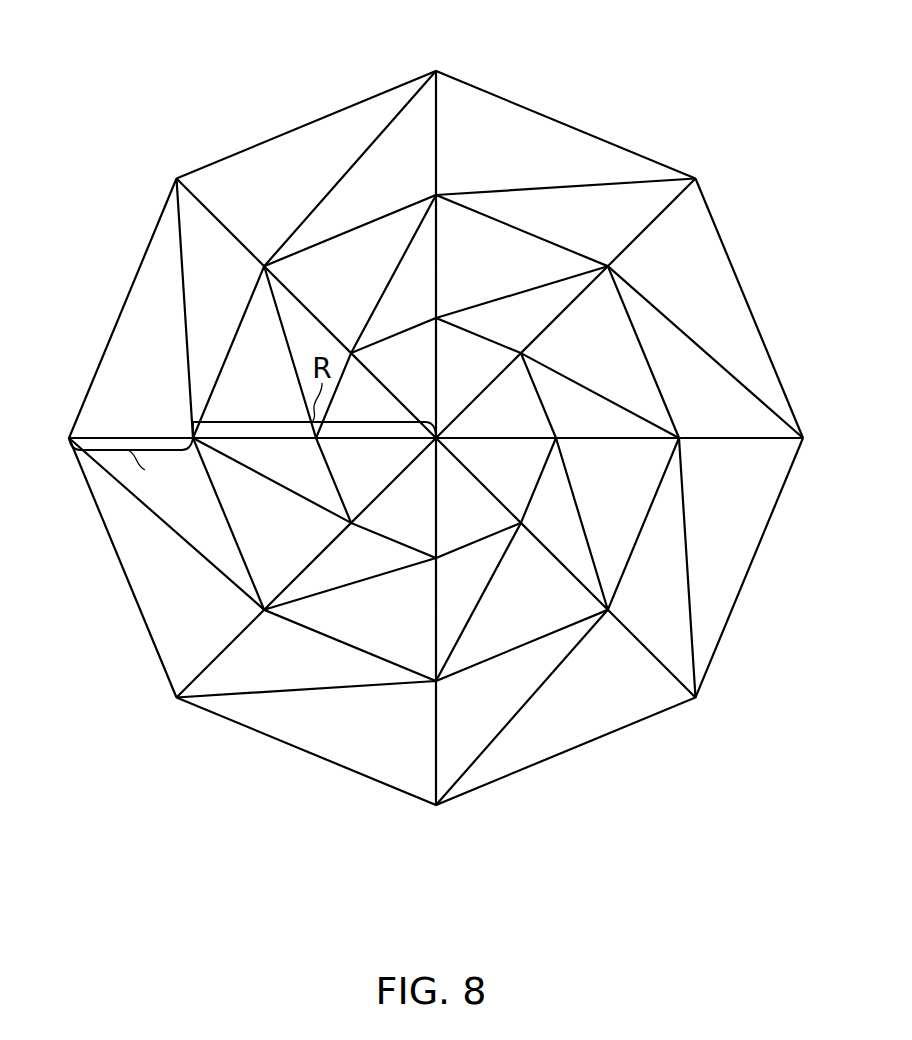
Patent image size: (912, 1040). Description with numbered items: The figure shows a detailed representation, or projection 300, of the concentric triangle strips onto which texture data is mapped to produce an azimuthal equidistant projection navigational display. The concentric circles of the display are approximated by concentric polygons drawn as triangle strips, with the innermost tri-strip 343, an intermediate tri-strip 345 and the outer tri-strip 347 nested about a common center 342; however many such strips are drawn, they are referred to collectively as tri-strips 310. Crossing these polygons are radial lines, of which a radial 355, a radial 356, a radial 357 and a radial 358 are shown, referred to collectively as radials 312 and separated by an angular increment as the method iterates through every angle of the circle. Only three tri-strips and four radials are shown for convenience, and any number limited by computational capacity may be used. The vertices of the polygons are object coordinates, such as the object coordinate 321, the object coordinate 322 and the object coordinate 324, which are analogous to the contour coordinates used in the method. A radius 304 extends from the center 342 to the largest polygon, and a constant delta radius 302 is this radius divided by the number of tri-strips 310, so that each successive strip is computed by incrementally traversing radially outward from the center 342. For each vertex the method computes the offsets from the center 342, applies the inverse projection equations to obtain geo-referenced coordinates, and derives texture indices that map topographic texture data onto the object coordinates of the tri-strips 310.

The projection 300 is at (285, 875).
The constant delta radius value 302 is at (127, 450).
The radius 304 is at (308, 421).
The tri-strips 310 is at (228, 748).
The radials 312 is at (125, 700).
The object coordinate 321 is at (68, 438).
The object coordinate 322 is at (436, 71).
The object coordinate 324 is at (803, 438).
The center 342 is at (438, 432).
The concentric tri-strip 343 is at (468, 547).
The concentric tri-strip 345 is at (653, 505).
The concentric tri-strip 347 is at (743, 277).
The radial 355 is at (718, 437).
The radial 356 is at (226, 226).
The radial 357 is at (436, 135).
The radial 358 is at (655, 225).